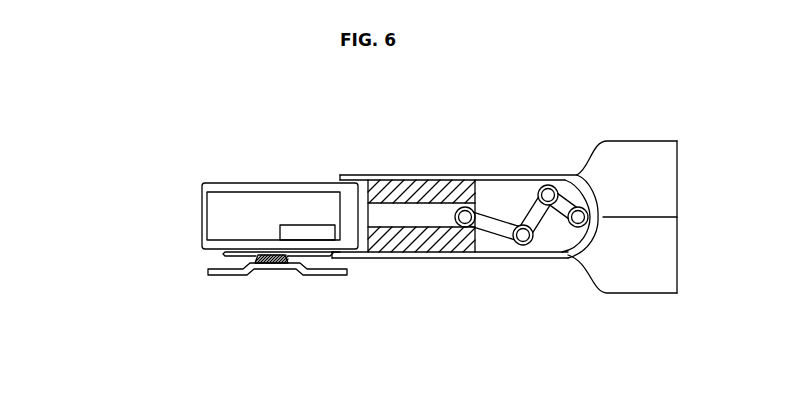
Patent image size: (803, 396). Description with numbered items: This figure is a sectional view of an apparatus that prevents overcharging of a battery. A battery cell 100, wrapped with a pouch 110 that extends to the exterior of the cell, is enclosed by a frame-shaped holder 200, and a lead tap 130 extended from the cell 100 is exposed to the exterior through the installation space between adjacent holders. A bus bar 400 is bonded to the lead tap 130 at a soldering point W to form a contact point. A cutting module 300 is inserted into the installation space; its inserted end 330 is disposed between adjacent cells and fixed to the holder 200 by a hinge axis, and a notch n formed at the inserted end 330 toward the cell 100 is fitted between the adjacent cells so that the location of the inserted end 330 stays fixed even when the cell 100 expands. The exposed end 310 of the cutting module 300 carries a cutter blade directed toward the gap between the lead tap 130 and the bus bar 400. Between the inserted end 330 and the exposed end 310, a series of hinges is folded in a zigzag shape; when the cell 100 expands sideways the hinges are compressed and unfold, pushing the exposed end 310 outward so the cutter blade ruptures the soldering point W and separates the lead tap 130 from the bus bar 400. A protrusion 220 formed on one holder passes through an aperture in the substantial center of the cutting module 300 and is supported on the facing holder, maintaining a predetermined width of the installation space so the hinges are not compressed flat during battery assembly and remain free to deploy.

The battery cell 100 is at (642, 272).
The pouch 110 is at (517, 258).
The lead tap 130 is at (232, 259).
The holder 200 is at (422, 175).
The protrusion 220 is at (385, 206).
The cutting module 300 is at (203, 233).
The exposed end 310 is at (237, 183).
The inserted end 330 is at (562, 186).
The bus bar 400 is at (328, 276).
The soldering point W is at (268, 264).
The notch n is at (592, 217).